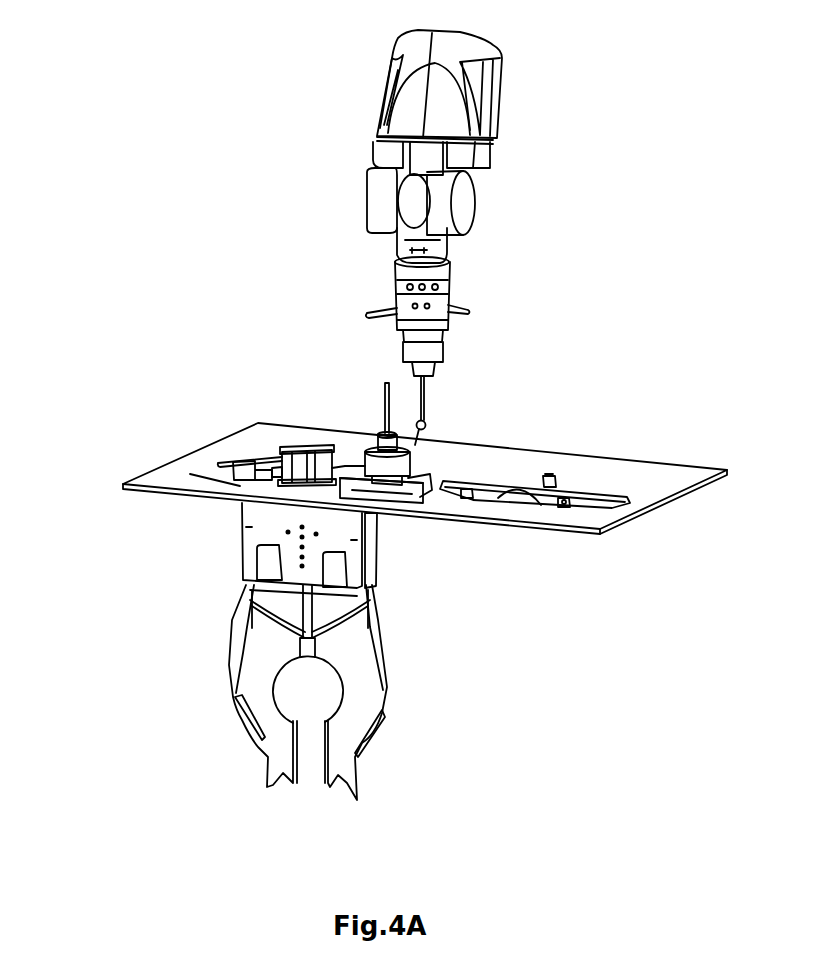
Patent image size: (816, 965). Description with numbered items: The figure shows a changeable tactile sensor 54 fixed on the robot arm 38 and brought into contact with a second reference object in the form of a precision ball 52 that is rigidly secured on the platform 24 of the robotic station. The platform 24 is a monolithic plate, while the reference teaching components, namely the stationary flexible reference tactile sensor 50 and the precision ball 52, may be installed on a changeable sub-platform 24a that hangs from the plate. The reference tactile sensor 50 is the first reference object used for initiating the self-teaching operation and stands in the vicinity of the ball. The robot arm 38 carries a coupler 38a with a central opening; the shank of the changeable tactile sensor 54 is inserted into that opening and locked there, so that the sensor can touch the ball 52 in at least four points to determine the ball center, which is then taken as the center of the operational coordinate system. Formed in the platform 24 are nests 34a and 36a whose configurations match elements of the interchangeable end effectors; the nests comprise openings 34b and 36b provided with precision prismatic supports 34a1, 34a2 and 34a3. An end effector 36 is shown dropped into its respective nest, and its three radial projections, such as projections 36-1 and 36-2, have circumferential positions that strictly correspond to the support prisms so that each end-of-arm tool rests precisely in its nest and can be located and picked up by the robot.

The platform 24 is at (720, 477).
The changeable sub-platform 24a is at (413, 513).
The nest 34a is at (515, 483).
The precision prismatic support 34a1 is at (552, 474).
The precision prismatic support 34a2 is at (617, 503).
The precision prismatic support 34a3 is at (473, 500).
The opening 34b is at (530, 500).
The end effector 36 is at (250, 647).
The nest 36a is at (247, 455).
The opening 36b is at (220, 462).
The radial projection 36-1 is at (240, 463).
The radial projection 36-2 is at (343, 437).
The robot arm 38 is at (500, 258).
The coupler 38a is at (450, 296).
The reference tactile sensor 50 is at (387, 381).
The precision ball 52 is at (430, 430).
The changeable tactile sensor 54 is at (430, 400).